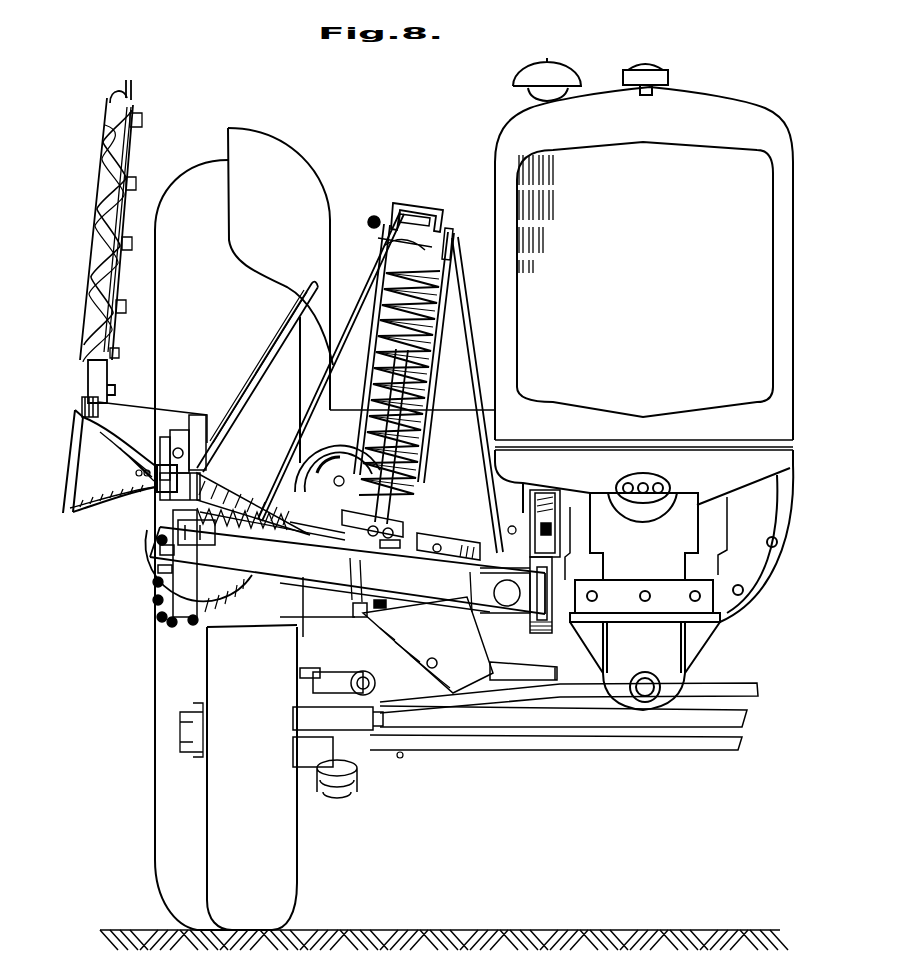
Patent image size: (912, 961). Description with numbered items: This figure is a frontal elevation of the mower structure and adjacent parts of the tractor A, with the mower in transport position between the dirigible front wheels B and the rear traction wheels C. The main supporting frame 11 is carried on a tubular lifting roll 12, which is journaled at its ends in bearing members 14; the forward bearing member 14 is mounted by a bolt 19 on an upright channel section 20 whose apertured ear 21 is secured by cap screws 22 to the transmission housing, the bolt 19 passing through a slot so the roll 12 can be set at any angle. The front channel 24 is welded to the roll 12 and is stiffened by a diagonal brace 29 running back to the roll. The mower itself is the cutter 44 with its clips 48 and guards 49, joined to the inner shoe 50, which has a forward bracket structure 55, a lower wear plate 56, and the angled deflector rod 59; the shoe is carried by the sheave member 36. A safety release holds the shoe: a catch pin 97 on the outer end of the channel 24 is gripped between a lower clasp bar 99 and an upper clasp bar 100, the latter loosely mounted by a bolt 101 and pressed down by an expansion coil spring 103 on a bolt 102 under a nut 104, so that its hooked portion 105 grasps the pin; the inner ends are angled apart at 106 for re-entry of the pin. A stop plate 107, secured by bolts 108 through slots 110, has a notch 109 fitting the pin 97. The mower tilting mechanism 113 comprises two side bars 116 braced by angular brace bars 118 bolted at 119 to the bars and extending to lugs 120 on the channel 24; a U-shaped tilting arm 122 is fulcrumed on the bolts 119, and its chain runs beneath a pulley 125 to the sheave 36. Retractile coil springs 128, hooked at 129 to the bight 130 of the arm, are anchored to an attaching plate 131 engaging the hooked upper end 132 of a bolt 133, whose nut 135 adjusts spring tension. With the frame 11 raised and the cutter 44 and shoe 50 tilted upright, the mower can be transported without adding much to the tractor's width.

The tractor A is at (718, 106).
The dirigible front wheels B is at (310, 854).
The rear traction wheels C is at (149, 857).
The cutter 44 is at (144, 104).
The clips 48 is at (133, 195).
The guards 49 is at (96, 190).
The forward frame or bracket structure 55 is at (157, 427).
The lower wear plate 56 is at (73, 473).
The inner shoe 50 is at (74, 522).
The deflector rod 59 is at (262, 378).
The bolts 108 is at (173, 437).
The slots 110 is at (183, 437).
The bolt 101 is at (207, 437).
The upper clasp bar 100 is at (200, 477).
The expansion coil spring 103 is at (232, 492).
The notch 109 is at (202, 530).
The lower clasp bar 99 is at (160, 527).
The stop plate 107 is at (157, 542).
The catch pin 97 is at (157, 590).
The angled inner ends 106 is at (163, 613).
The sheave member 36 is at (188, 624).
The hooked portion 105 is at (228, 611).
The nut 104 is at (287, 533).
The bolt 102 is at (277, 540).
The diagonal brace 29 is at (347, 570).
The hooked upper end 132 is at (342, 524).
The attaching plate 131 is at (405, 527).
The lugs 120 is at (468, 542).
The cap screws 22 is at (540, 523).
The apertured ear 21 is at (557, 533).
The bearing members 14 is at (507, 620).
The upright channel section 20 is at (543, 627).
The tubular lifting roll 12 is at (481, 625).
The bolt 19 is at (467, 617).
The main supporting frame 11 is at (433, 613).
The nut 135 is at (380, 608).
The bolt 133 is at (362, 618).
The front channel 24 is at (305, 582).
The U-shaped tilting arm 122 is at (395, 207).
The bight 130 is at (427, 220).
The bolts 119 is at (370, 223).
The hooks 129 is at (387, 245).
The mower tilting mechanism 113 is at (457, 261).
The side bars 116 is at (372, 341).
The retractile coil springs 128 is at (418, 367).
The angular brace bars 118 is at (305, 415).
The pulley 125 is at (312, 450).